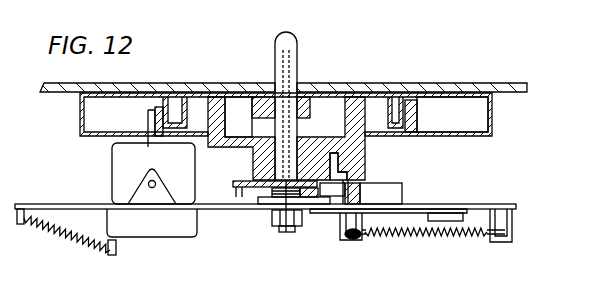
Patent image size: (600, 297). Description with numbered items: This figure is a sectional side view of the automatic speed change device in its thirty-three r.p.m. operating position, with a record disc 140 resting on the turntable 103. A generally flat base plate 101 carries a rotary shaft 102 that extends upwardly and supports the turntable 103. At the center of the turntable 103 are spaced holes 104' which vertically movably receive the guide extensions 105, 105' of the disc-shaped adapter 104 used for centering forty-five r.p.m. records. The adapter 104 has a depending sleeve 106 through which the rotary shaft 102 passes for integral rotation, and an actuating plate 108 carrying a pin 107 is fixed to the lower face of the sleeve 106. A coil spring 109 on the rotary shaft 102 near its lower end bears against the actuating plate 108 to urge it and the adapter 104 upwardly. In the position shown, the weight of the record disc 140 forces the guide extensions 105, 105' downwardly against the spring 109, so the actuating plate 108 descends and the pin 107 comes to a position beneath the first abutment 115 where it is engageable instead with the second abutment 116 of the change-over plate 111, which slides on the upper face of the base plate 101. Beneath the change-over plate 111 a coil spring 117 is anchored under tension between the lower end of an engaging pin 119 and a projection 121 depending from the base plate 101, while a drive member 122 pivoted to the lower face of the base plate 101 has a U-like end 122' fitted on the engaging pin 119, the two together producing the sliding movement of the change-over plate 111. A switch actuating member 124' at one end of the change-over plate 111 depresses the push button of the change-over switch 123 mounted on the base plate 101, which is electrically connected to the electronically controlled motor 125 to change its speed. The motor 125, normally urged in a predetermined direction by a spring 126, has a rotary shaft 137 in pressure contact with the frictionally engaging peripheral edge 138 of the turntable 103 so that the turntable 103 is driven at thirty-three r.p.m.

The base plate 101 is at (60, 204).
The rotary shaft 102 is at (290, 71).
The turntable 103 is at (80, 121).
The adapter 104 is at (364, 158).
The spaced holes 104' is at (325, 73).
The guide extension 105 is at (232, 116).
The guide extension 105' is at (340, 115).
The depending sleeve 106 is at (260, 162).
The pin 107 is at (238, 187).
The actuating plate 108 is at (312, 200).
The coil spring 109 is at (287, 232).
The change-over plate 111 is at (262, 145).
The first abutment 115 is at (352, 184).
The second abutment 116 is at (252, 204).
The coil spring 117 is at (481, 237).
The engaging pin 119 is at (398, 232).
The projection 121 is at (497, 212).
The drive member 122 is at (450, 239).
The U-like end 122' is at (373, 250).
The change-over switch 123 is at (402, 193).
The switch actuating member 124' is at (336, 250).
The electronically controlled motor 125 is at (123, 173).
The spring 126 is at (52, 242).
The rotary shaft 137 is at (148, 126).
The frictionally engaging peripheral edge 138 is at (418, 115).
The 33-r.p.m. record disc 140 is at (468, 83).